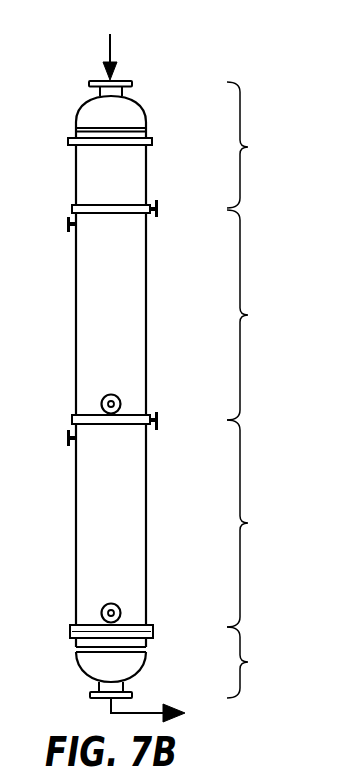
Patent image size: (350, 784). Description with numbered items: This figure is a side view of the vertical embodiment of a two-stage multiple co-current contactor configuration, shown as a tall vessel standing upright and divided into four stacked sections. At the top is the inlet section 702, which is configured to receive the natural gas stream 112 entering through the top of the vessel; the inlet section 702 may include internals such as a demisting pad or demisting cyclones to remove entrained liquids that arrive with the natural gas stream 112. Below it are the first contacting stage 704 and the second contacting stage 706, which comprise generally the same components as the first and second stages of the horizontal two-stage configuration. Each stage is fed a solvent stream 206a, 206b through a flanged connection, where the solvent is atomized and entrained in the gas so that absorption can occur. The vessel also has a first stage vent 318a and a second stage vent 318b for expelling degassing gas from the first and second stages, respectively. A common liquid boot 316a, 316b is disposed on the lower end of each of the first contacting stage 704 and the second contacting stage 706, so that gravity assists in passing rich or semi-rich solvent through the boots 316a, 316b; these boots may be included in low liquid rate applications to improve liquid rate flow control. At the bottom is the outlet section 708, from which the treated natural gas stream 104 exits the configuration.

The natural gas stream 112 is at (111, 46).
The outlet product stream 104 is at (167, 710).
The inlet section 702 is at (177, 144).
The first contacting stage 704 is at (181, 315).
The second contacting stage 706 is at (181, 523).
The outlet section 708 is at (178, 661).
The solvent stream 206a is at (158, 208).
The solvent stream 206b is at (158, 421).
The first stage vent 318a is at (66, 223).
The second stage vent 318b is at (66, 437).
The common liquid boot 316a is at (121, 399).
The common liquid boot 316b is at (121, 608).